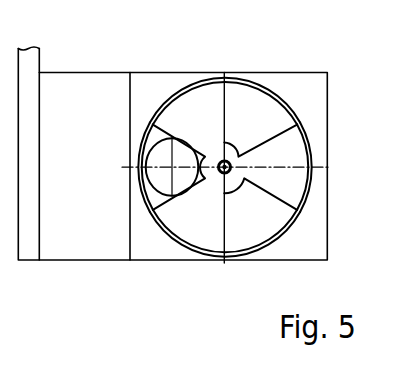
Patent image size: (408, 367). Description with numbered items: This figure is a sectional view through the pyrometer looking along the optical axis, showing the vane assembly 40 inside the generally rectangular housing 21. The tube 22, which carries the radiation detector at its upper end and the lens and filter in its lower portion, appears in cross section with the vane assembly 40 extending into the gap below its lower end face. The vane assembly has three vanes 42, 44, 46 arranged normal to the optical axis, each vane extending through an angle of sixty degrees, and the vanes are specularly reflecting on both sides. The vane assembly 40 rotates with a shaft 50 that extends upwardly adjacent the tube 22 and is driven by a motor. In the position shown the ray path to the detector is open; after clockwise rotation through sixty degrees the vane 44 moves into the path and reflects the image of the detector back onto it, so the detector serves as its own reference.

The housing 21 is at (327, 251).
The tube 22 is at (152, 151).
The vane assembly 40 is at (232, 163).
The vane 42 is at (189, 103).
The vane 44 is at (193, 234).
The vane 46 is at (297, 191).
The shaft 50 is at (232, 163).